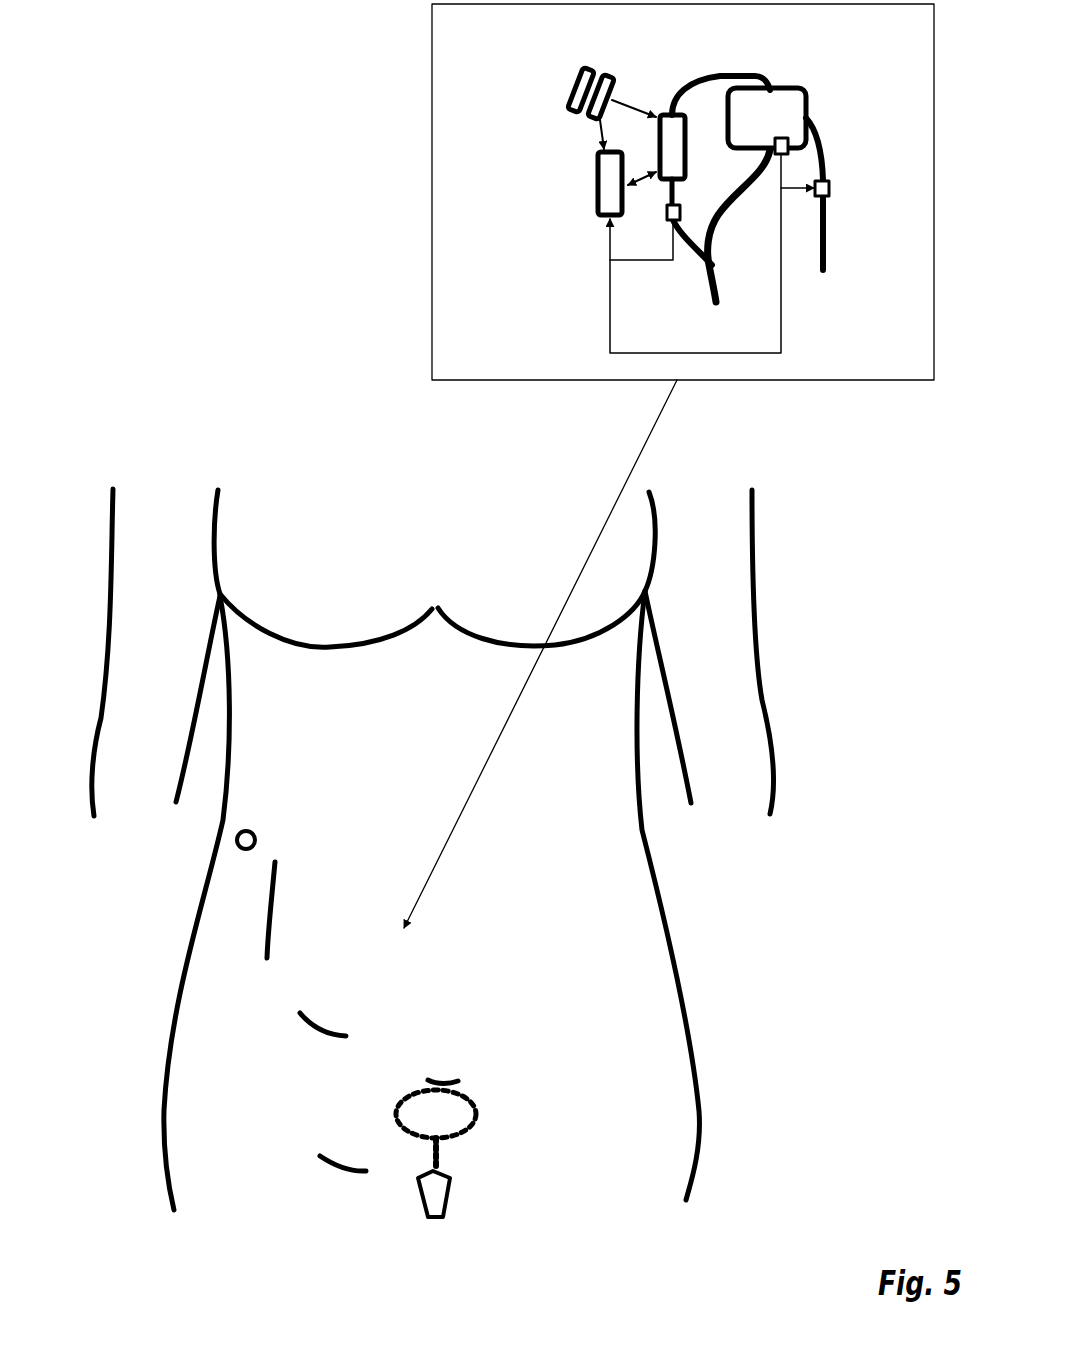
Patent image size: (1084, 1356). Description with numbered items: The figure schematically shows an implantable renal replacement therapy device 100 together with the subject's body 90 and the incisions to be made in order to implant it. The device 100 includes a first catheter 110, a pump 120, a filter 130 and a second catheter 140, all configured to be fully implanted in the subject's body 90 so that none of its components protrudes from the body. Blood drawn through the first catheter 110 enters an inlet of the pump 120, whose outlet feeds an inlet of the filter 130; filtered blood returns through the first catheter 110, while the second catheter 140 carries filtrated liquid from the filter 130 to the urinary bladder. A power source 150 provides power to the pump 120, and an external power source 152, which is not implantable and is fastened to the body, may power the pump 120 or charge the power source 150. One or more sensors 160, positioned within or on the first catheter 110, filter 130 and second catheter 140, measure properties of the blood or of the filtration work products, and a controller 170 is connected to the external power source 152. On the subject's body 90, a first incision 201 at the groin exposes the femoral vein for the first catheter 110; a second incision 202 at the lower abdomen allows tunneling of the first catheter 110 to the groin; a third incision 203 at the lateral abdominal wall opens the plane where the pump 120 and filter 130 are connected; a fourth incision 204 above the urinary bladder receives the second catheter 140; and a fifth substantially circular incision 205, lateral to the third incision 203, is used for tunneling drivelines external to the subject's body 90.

The implantable renal replacement therapy device 100 is at (480, 37).
The first catheter 110 is at (704, 268).
The pump 120 is at (684, 150).
The filter 130 is at (806, 94).
The second catheter 140 is at (826, 234).
The power source 150 is at (612, 78).
The external power source 152 is at (574, 88).
The sensors 160 is at (682, 213).
The controller 170 is at (597, 182).
The subject's body 90 is at (108, 540).
The first incision 201 is at (337, 1166).
The second incision 202 is at (322, 1024).
The third incision 203 is at (276, 916).
The fourth incision 204 is at (446, 1080).
The fifth substantially circular incision 205 is at (254, 833).